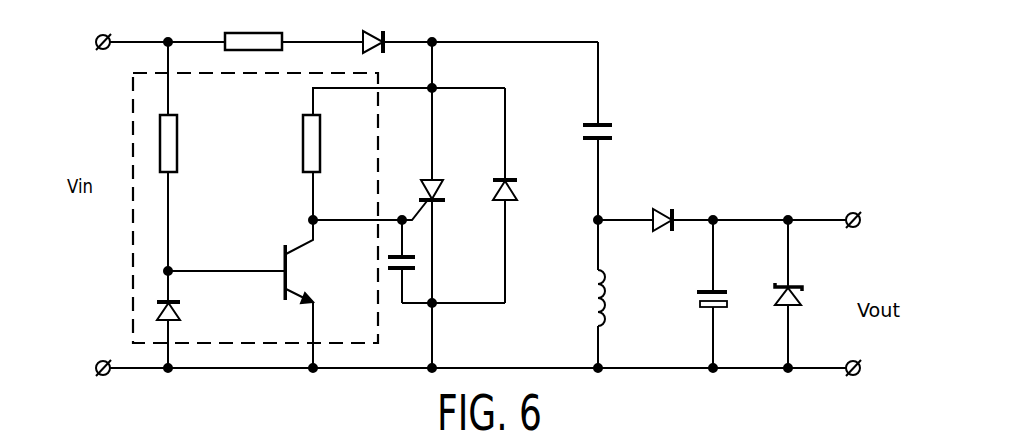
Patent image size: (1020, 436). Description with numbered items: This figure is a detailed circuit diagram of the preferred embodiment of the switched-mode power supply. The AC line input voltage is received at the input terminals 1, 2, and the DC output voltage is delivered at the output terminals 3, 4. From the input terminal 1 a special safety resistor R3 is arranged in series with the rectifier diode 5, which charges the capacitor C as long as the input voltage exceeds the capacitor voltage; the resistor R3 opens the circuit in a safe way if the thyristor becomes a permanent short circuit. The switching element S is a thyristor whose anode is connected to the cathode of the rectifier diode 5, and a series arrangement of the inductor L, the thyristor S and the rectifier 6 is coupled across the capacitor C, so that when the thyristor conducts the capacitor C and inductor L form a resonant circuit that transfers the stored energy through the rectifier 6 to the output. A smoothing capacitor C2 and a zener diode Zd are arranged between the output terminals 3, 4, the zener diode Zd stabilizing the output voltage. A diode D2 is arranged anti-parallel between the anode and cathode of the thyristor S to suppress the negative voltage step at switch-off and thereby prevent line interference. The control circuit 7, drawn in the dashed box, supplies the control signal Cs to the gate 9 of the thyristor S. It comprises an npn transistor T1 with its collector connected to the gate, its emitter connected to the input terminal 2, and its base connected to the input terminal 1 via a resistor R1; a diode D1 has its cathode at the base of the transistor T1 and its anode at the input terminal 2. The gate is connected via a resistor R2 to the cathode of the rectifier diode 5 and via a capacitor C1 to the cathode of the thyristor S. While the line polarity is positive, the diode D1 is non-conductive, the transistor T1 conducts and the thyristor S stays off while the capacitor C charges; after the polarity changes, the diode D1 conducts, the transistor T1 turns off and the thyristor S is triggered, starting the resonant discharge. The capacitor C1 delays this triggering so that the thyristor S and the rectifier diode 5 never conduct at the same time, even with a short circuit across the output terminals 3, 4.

The input terminal 1 is at (95, 41).
The input terminal 2 is at (95, 368).
The output terminal 3 is at (853, 211).
The output terminal 4 is at (852, 360).
The rectifier diode 5 is at (362, 37).
The rectifier 6 is at (661, 206).
The control circuit 7 is at (132, 135).
The gate of thyristor 9 is at (417, 208).
The resistor R1 is at (179, 150).
The resistor R2 is at (302, 160).
The safety resistor R3 is at (252, 33).
The capacitor C is at (610, 125).
The capacitor C1 is at (395, 272).
The smoothing capacitor C2 is at (717, 290).
The control signal Cs is at (388, 217).
The diode D1 is at (181, 313).
The diode D2 is at (518, 190).
The npn transistor T1 is at (290, 276).
The thyristor S is at (440, 191).
The inductor L is at (612, 298).
The zener diode Zd is at (784, 306).